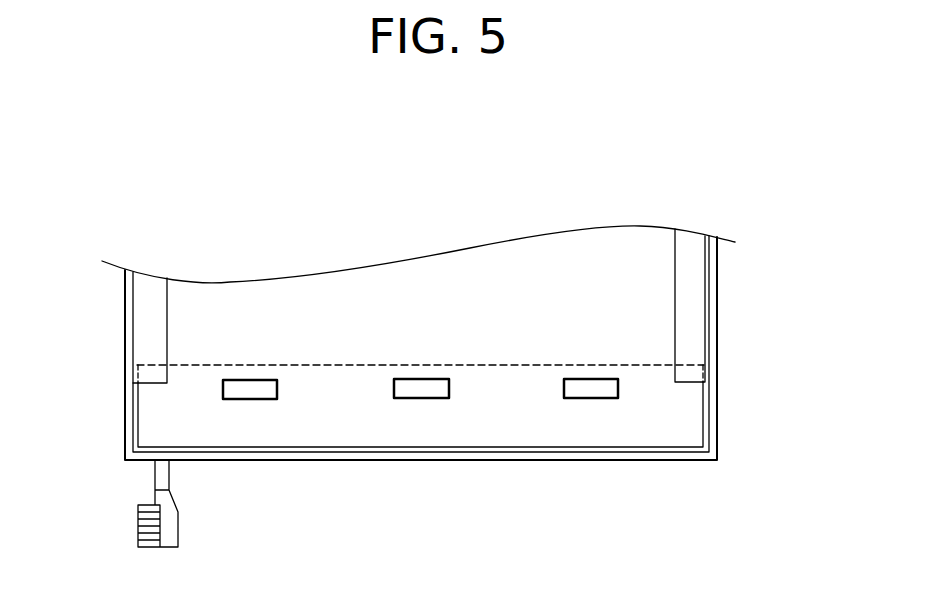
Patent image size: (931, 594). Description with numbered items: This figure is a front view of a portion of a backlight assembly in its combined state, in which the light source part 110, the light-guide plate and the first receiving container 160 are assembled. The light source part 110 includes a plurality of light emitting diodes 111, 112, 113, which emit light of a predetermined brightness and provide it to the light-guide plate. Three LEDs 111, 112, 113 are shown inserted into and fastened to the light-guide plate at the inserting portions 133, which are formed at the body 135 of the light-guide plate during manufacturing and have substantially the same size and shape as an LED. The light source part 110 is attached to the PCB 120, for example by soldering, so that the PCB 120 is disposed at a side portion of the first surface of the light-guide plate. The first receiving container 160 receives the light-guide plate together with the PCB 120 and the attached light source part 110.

The light source part 110 is at (618, 512).
The light emitting diode 111 is at (592, 392).
The light emitting diode 112 is at (417, 390).
The light emitting diode 113 is at (258, 392).
The PCB 120 is at (668, 357).
The inserting portion 133 is at (620, 390).
The body 135 is at (658, 307).
The first receiving container 160 is at (677, 455).